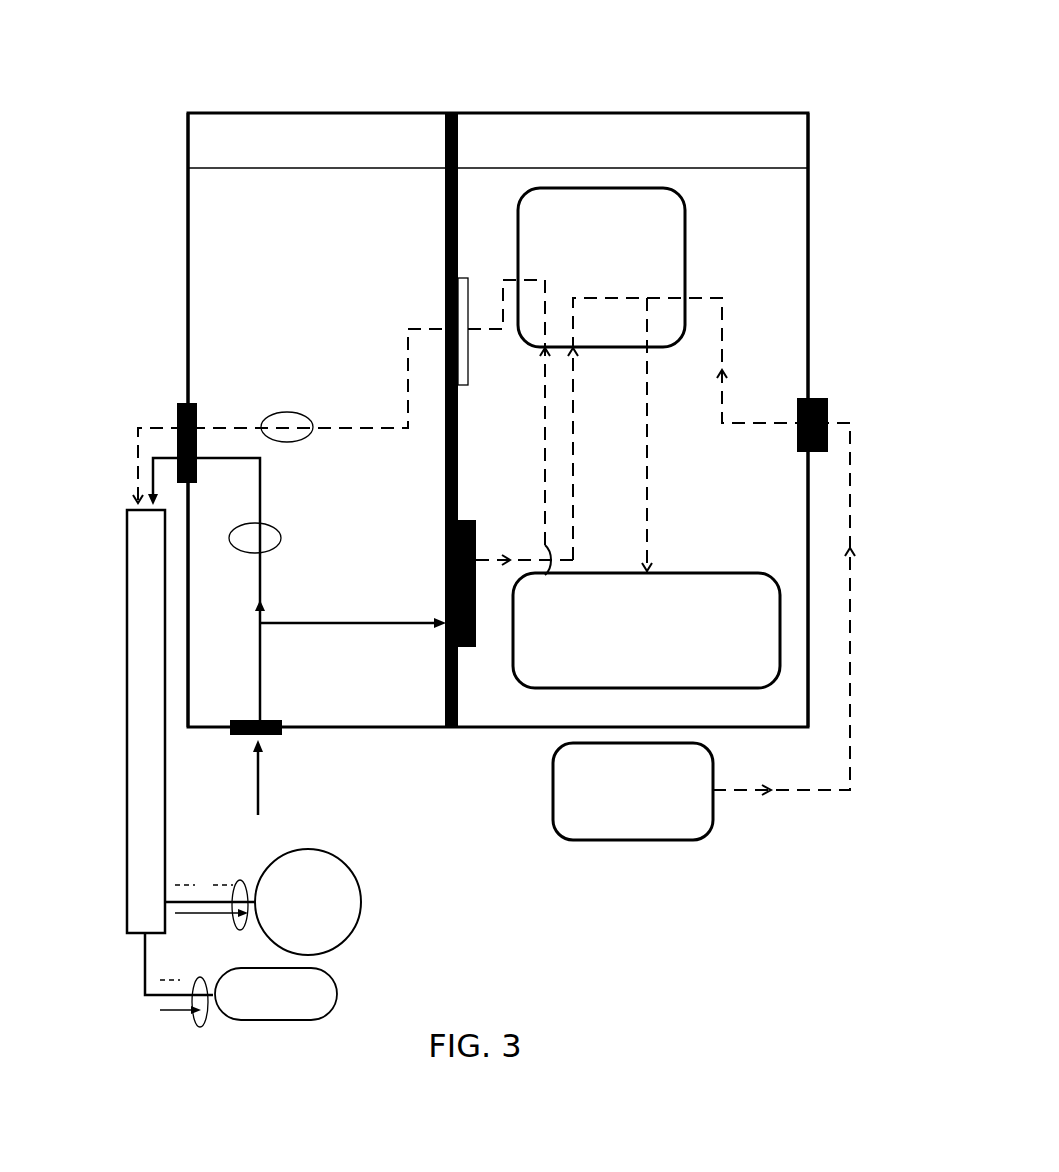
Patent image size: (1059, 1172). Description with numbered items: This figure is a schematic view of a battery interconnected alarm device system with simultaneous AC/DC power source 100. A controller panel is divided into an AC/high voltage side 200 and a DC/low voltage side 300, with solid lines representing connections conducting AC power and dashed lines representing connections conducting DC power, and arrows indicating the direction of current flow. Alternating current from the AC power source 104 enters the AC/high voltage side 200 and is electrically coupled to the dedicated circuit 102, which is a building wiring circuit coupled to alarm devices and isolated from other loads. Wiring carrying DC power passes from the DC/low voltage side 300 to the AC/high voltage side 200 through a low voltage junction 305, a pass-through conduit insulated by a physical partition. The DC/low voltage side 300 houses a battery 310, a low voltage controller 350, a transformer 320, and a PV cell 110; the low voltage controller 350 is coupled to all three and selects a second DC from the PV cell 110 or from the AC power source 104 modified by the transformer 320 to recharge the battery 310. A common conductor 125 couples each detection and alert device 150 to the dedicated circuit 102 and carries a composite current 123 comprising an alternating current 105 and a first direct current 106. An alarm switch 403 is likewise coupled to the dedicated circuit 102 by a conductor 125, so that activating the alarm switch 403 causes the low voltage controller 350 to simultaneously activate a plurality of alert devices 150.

The alarm device system with simultaneous AC/DC power source 100 is at (770, 86).
The AC/high voltage side 200 is at (231, 143).
The DC/low voltage side 300 is at (603, 158).
The low voltage junction 305 is at (442, 292).
The low voltage controller 350 is at (552, 227).
The battery 310 is at (595, 621).
The photovoltaic cell 110 is at (601, 791).
The transformer 320 is at (442, 648).
The first direct current 106 is at (302, 413).
The alternating current 105 is at (267, 527).
The dedicated circuit 102 is at (116, 561).
The AC power source 104 is at (276, 808).
The conductor 125 is at (233, 885).
The composite current 123 is at (243, 930).
The detection and alert device 150 is at (367, 900).
The alarm switch 403 is at (346, 985).